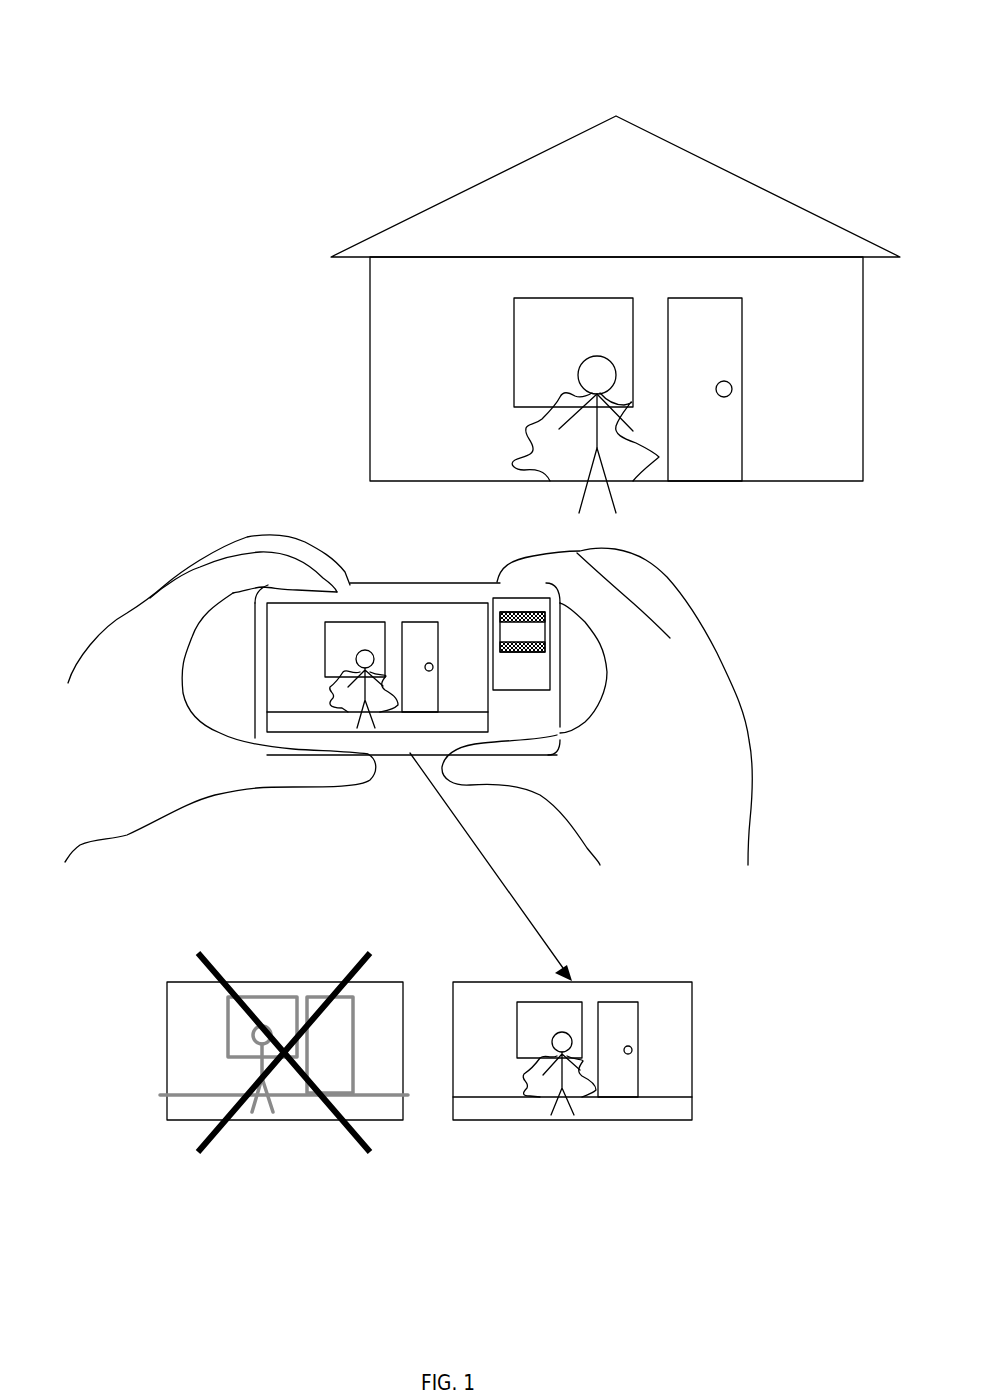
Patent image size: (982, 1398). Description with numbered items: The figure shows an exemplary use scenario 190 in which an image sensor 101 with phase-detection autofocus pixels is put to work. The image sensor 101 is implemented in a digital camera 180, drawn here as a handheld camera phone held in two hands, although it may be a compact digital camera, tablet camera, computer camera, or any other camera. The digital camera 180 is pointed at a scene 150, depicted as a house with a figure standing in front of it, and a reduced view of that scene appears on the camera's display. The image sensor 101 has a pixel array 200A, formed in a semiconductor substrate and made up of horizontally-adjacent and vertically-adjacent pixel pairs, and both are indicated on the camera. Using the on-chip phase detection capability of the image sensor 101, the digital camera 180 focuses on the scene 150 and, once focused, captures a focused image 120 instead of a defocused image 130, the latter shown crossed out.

The use scenario 190 is at (94, 65).
The scene 150 is at (224, 322).
The digital camera 180 is at (390, 582).
The defocused image 130 is at (307, 1122).
The focused image 120 is at (603, 1122).
The pixel array 200A is at (522, 632).
The image sensor 101 is at (538, 682).